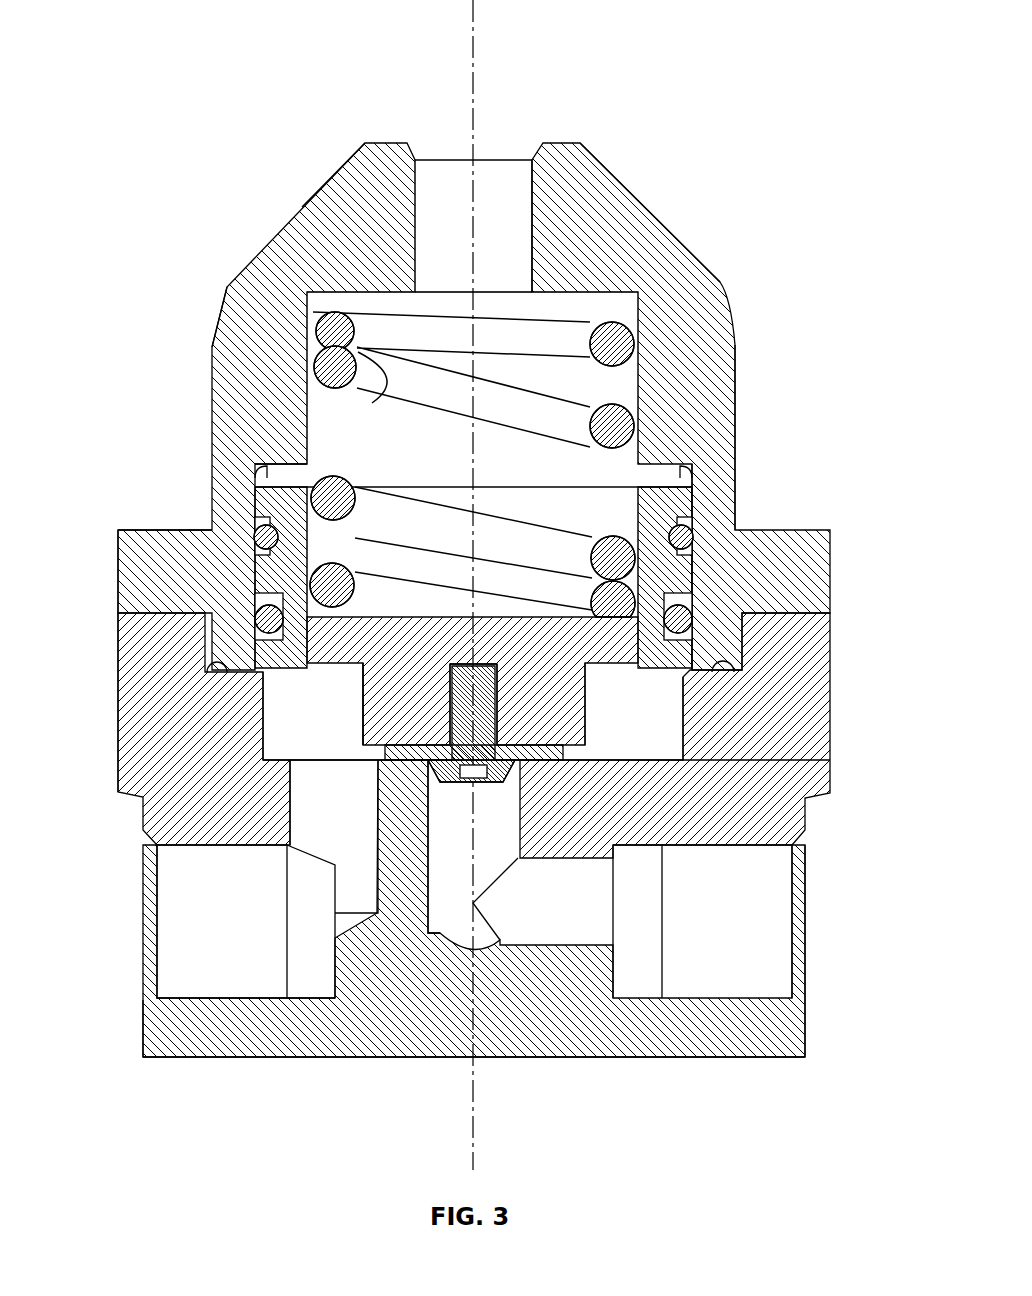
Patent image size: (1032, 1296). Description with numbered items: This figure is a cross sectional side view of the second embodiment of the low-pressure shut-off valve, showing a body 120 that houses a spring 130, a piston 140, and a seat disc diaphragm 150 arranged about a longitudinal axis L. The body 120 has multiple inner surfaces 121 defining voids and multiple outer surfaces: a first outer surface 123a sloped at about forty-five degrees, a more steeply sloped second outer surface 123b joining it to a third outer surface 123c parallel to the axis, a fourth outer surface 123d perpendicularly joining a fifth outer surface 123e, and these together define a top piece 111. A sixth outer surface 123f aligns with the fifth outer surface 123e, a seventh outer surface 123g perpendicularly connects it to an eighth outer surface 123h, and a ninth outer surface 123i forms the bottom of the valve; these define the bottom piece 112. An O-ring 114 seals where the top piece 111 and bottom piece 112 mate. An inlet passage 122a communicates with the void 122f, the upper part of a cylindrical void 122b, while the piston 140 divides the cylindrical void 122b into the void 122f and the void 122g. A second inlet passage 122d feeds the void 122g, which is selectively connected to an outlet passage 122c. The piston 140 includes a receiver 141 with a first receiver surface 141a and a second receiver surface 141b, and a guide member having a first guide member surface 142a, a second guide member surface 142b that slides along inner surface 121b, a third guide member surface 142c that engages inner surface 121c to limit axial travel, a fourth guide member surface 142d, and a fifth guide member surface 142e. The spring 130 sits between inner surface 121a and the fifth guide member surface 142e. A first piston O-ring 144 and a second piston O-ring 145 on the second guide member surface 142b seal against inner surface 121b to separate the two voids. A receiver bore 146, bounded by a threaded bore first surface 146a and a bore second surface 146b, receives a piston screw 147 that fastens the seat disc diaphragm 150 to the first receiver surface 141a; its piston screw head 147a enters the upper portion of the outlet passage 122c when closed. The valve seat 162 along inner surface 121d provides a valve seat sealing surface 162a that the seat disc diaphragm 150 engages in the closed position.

The longitudinal axis L is at (478, 6).
The top piece 111 is at (722, 293).
The bottom piece 112 is at (775, 1058).
The O-ring 114 is at (210, 663).
The body 120 is at (748, 208).
The inner surfaces 121 is at (532, 222).
The inner surface 121a is at (534, 288).
The inner surface 121b is at (694, 473).
The inner surface 121c is at (256, 466).
The inner surface 121d is at (341, 760).
The inlet passage 122a is at (499, 224).
The cylindrical void 122b is at (385, 461).
The outlet passage 122c is at (746, 971).
The inlet passage 122d is at (253, 988).
The void 122f is at (458, 454).
The void 122g is at (328, 761).
The first outer surface 123a is at (303, 206).
The second outer surface 123b is at (225, 290).
The third outer surface 123c is at (738, 390).
The fourth outer surface 123d is at (130, 528).
The fifth outer surface 123e is at (119, 556).
The sixth outer surface 123f is at (119, 626).
The seventh outer surface 123g is at (120, 803).
The eighth outer surface 123h is at (143, 1045).
The ninth outer surface 123i is at (303, 1058).
The spring 130 is at (323, 376).
The piston 140 is at (694, 504).
The receiver 141 is at (572, 718).
The first receiver surface 141a is at (363, 762).
The second receiver surface 141b is at (363, 692).
The first guide member surface 142a is at (641, 670).
The second guide member surface 142b is at (694, 592).
The third guide member surface 142c is at (256, 474).
The fourth guide member surface 142d is at (645, 466).
The fifth guide member surface 142e is at (512, 612).
The first piston O-ring 144 is at (694, 542).
The second piston O-ring 145 is at (712, 672).
The receiver bore 146 is at (450, 678).
The bore first surface 146a is at (498, 722).
The bore second surface 146b is at (458, 662).
The piston screw 147 is at (463, 786).
The piston screw head 147a is at (428, 783).
The seat disc diaphragm 150 is at (528, 763).
The valve seat 162 is at (538, 762).
The valve seat sealing surface 162a is at (526, 762).